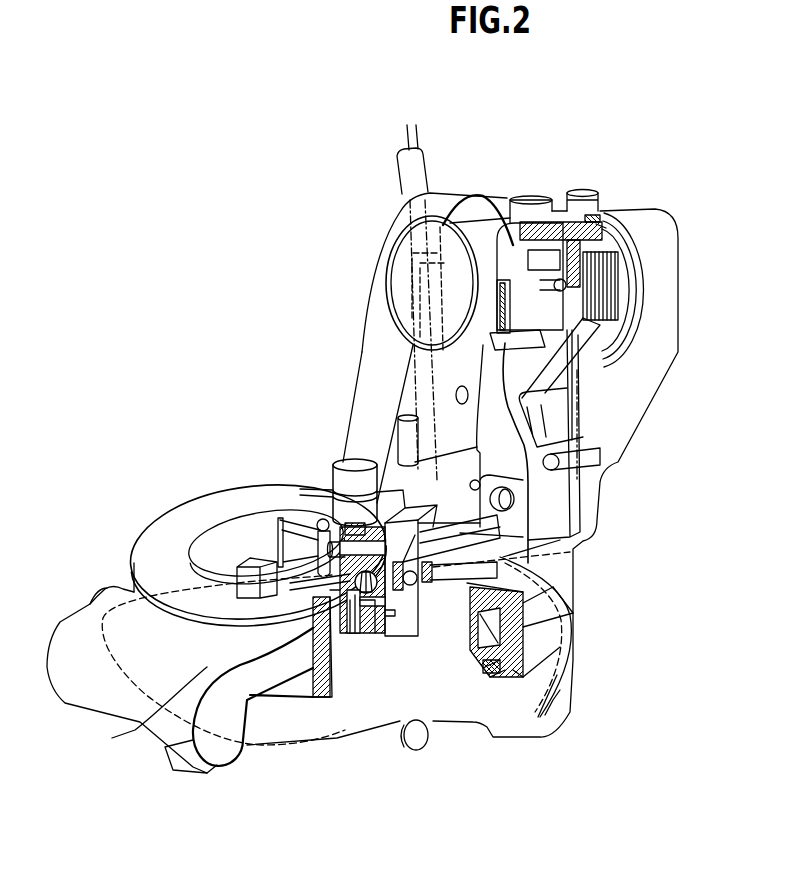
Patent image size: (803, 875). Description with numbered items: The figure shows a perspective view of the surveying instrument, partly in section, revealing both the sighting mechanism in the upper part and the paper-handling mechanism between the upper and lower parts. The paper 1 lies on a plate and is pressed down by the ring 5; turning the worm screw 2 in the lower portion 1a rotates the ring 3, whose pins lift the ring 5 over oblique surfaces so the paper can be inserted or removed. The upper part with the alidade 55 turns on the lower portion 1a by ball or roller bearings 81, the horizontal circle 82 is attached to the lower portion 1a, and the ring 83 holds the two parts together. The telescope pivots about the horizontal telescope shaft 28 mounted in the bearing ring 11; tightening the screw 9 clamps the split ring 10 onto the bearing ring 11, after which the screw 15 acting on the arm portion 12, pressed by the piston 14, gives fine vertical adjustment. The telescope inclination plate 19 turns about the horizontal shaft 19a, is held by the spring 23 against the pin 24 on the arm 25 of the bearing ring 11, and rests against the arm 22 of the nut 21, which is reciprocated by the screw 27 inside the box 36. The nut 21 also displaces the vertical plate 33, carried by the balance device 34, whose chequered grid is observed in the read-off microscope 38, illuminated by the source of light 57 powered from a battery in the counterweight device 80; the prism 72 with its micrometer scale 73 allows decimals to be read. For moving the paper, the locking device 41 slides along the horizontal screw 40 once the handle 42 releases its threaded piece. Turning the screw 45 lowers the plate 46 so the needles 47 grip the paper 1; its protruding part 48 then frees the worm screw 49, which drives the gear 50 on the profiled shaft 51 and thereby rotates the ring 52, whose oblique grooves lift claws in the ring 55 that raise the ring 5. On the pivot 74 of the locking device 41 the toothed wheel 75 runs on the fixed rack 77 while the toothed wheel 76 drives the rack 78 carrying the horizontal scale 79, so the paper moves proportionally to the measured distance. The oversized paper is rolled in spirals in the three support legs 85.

The paper 1 is at (474, 705).
The lower portion 1a is at (513, 670).
The worm screw 2 is at (99, 596).
The ring 3 is at (503, 670).
The ring 5 is at (483, 668).
The screw 9 is at (570, 190).
The split ring 10 is at (605, 217).
The bearing ring 11 is at (600, 226).
The arm portion 12 is at (587, 405).
The piston 14 is at (560, 438).
The screw 15 is at (583, 445).
The telescope inclination plate 19 is at (485, 345).
The horizontal shaft 19a is at (548, 335).
The nut 21 is at (570, 285).
The arm 22 is at (537, 238).
The spring 23 is at (497, 323).
The pin 24 is at (500, 292).
The arm 25 is at (520, 303).
The screw 27 is at (600, 288).
The horizontal telescope shaft 28 is at (610, 230).
The vertical plate 33 is at (622, 262).
The balance device 34 is at (584, 356).
The box 36 is at (617, 300).
The read-off microscope 38 is at (422, 172).
The horizontal screw 40 is at (277, 562).
The locking device 41 is at (425, 588).
The handle 42 is at (326, 576).
The screw 45 is at (355, 630).
The plate 46 is at (383, 618).
The needles 47 is at (372, 633).
The upwardly protruding part 48 is at (392, 620).
The worm screw 49 is at (338, 588).
The gear 50 is at (397, 567).
The profiled shaft 51 is at (333, 630).
The ring 52 is at (475, 602).
The ring (alidade) 55 is at (523, 604).
The source of light 57 is at (481, 485).
The prism (refractor) 72 is at (409, 440).
The scale 73 is at (468, 400).
The pivot 74 is at (403, 595).
The toothed wheel 75 is at (385, 615).
The toothed wheel 76 is at (417, 585).
The fixed rack 77 is at (435, 515).
The rack 78 is at (498, 574).
The horizontal scale 79 is at (510, 527).
The counterweight device 80 is at (215, 662).
The ball or roller bearings 81 is at (484, 625).
The horizontal circle 82 is at (488, 665).
The ring 83 is at (560, 622).
The support legs 85 is at (556, 709).